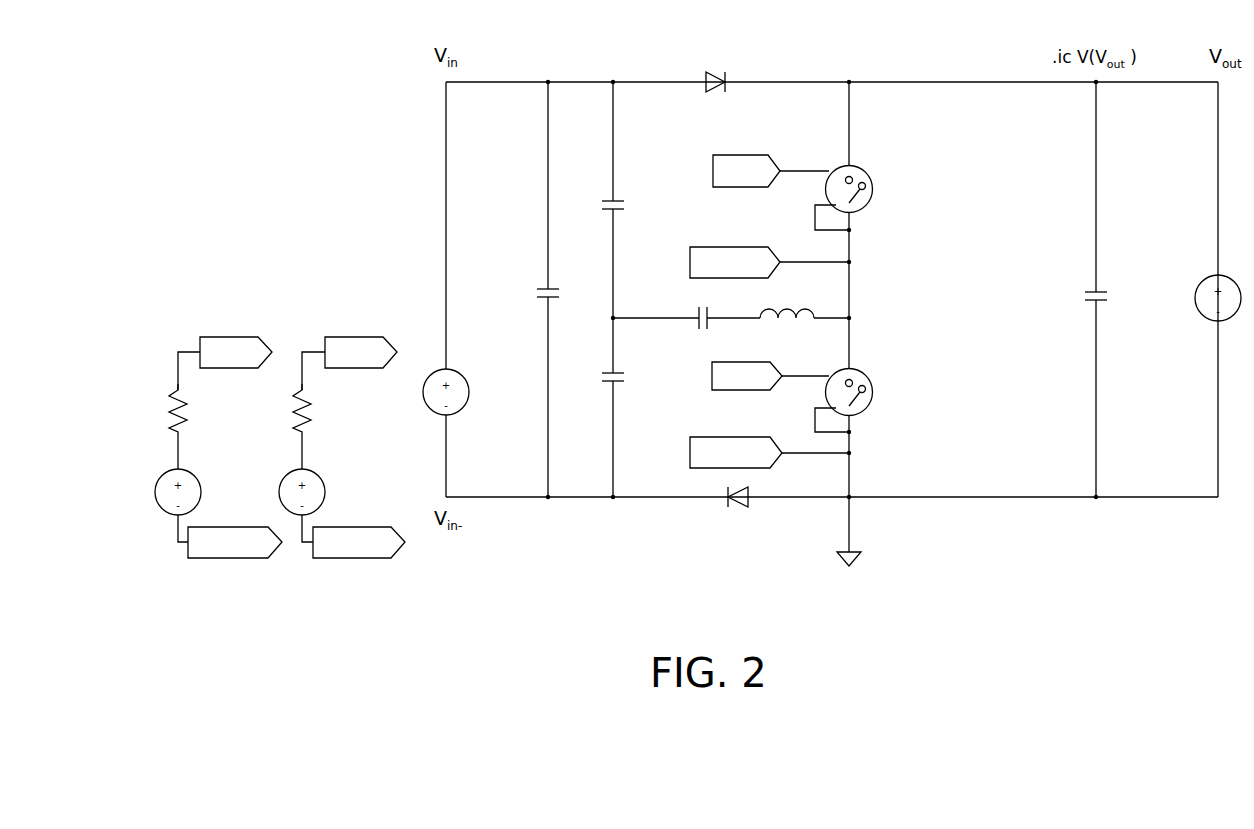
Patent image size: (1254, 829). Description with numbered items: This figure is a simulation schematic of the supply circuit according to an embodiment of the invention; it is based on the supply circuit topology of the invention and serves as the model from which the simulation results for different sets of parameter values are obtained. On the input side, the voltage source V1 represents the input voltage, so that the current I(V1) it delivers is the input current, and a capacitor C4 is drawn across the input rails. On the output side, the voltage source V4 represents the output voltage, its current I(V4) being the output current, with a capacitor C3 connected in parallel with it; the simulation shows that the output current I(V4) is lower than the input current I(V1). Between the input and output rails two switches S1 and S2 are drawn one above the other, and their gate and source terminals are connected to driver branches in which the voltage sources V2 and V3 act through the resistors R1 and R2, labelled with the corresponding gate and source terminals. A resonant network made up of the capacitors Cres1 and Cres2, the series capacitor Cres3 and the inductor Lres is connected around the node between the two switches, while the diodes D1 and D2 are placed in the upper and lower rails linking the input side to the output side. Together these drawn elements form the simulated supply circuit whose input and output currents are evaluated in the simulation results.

The input voltage source V1 is at (449, 380).
The gate 1 drive voltage source V2 is at (218, 498).
The gate 2 drive voltage source V3 is at (342, 498).
The output voltage source V4 is at (1212, 290).
The gate 1 resistor R1 is at (220, 387).
The gate 2 resistor R2 is at (345, 387).
The output capacitor C3 is at (1111, 289).
The input capacitor C4 is at (557, 289).
The resonant capacitor 1 Cres1 is at (666, 199).
The resonant capacitor 2 Cres2 is at (630, 407).
The resonant capacitor 3 Cres3 is at (686, 306).
The resonant inductor Lres is at (805, 301).
The diode 1 D1 is at (716, 68).
The diode 2 D2 is at (737, 521).
The switch 1 S1 is at (794, 216).
The switch 2 S2 is at (794, 415).